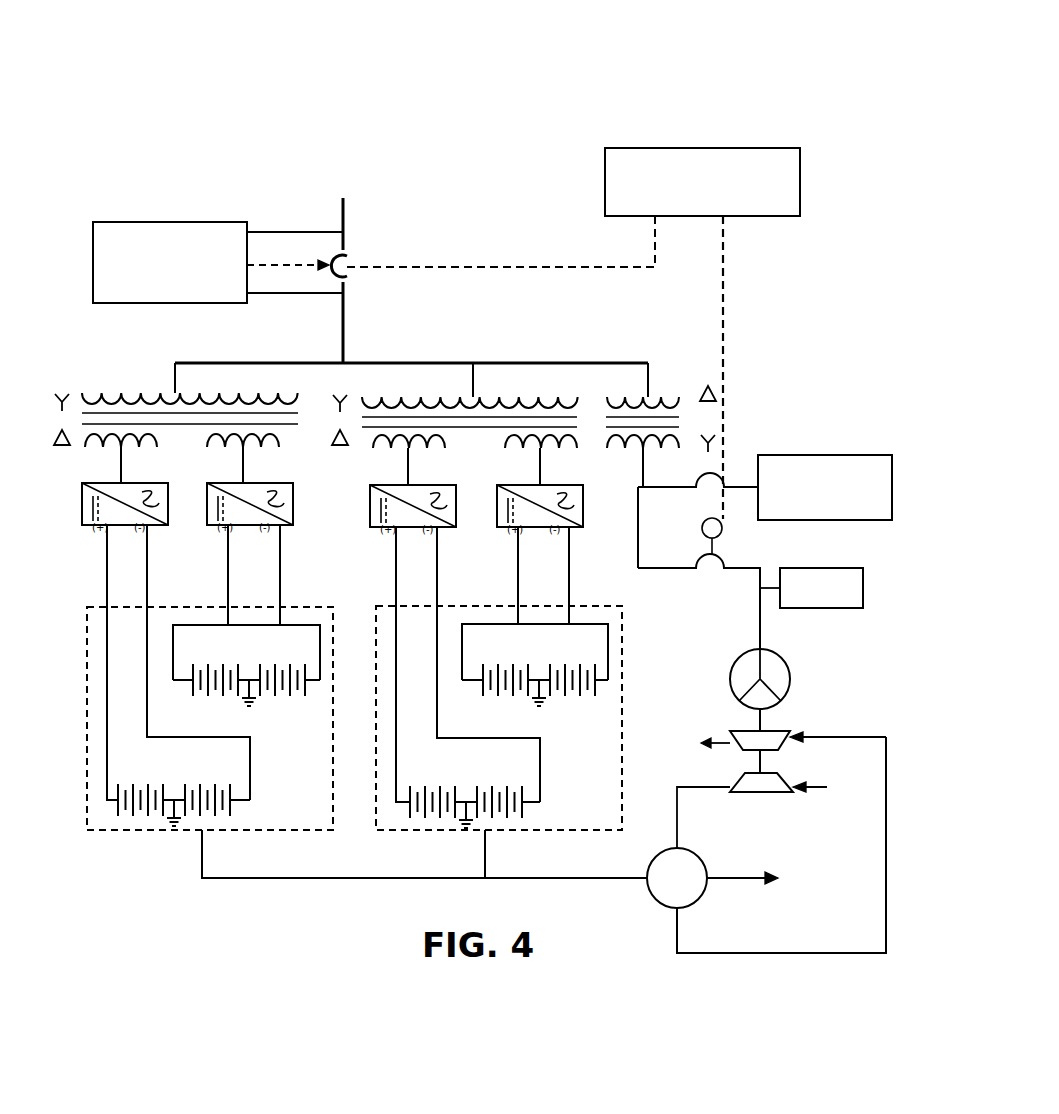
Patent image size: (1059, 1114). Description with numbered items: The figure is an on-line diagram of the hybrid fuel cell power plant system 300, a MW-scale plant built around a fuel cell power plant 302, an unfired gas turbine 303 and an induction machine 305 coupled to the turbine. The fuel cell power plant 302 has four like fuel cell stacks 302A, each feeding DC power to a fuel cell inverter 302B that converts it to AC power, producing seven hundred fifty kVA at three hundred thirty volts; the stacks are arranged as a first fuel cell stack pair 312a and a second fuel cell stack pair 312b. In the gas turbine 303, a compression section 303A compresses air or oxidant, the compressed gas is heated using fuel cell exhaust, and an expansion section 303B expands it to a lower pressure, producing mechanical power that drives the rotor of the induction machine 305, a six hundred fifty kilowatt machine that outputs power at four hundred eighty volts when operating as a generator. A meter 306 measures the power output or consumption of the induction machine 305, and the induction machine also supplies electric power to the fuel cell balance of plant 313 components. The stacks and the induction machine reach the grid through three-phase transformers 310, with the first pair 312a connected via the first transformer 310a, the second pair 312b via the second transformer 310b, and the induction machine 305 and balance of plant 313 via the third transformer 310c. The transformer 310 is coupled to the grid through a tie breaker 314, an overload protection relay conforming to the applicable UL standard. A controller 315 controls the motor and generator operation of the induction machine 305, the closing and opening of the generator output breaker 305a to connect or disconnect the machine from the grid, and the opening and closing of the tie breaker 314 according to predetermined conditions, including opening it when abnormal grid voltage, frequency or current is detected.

The hybrid fuel cell power plant system 300 is at (521, 60).
The fuel cell power plant 302 is at (190, 856).
The fuel cell stack 302A is at (274, 700).
The fuel cell inverter 302B is at (82, 508).
The gas turbine 303 is at (802, 813).
The compression section 303A is at (762, 793).
The expansion section 303B is at (735, 731).
The induction machine 305 is at (780, 668).
The generator output breaker 305a is at (706, 568).
The meter 306 is at (845, 560).
The transformer 310 is at (621, 359).
The first transformer 310a is at (118, 396).
The second transformer 310b is at (485, 408).
The third transformer 310c is at (660, 406).
The first fuel cell stack pair 312a is at (87, 806).
The second fuel cell stack pair 312b is at (622, 676).
The fuel cell balance of plant 313 is at (800, 456).
The tie breaker 314 is at (345, 257).
The controller 315 is at (706, 150).